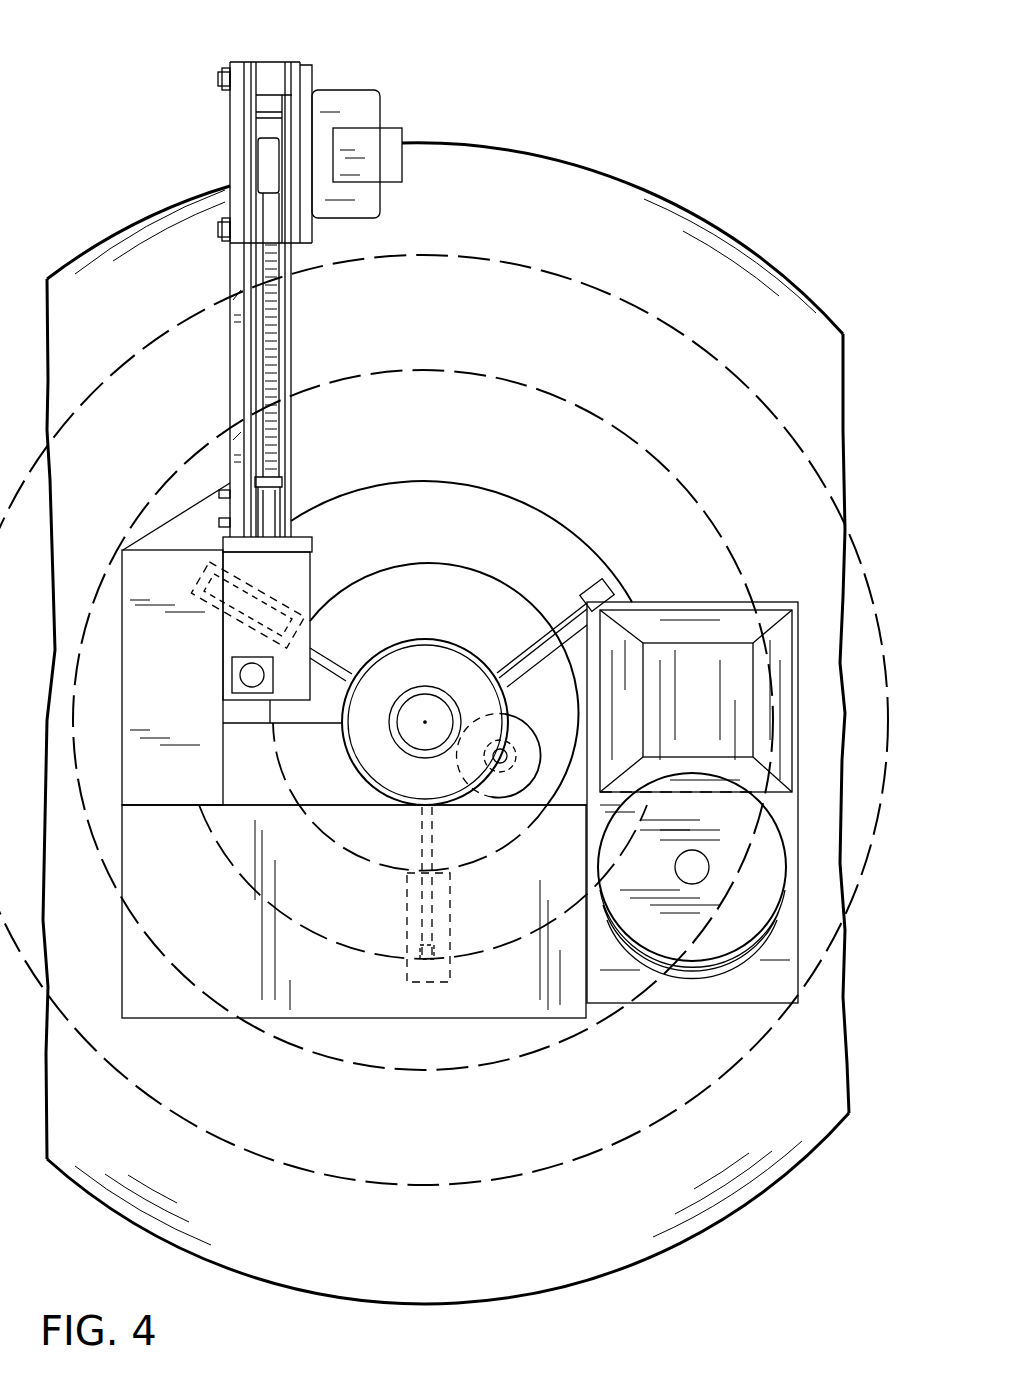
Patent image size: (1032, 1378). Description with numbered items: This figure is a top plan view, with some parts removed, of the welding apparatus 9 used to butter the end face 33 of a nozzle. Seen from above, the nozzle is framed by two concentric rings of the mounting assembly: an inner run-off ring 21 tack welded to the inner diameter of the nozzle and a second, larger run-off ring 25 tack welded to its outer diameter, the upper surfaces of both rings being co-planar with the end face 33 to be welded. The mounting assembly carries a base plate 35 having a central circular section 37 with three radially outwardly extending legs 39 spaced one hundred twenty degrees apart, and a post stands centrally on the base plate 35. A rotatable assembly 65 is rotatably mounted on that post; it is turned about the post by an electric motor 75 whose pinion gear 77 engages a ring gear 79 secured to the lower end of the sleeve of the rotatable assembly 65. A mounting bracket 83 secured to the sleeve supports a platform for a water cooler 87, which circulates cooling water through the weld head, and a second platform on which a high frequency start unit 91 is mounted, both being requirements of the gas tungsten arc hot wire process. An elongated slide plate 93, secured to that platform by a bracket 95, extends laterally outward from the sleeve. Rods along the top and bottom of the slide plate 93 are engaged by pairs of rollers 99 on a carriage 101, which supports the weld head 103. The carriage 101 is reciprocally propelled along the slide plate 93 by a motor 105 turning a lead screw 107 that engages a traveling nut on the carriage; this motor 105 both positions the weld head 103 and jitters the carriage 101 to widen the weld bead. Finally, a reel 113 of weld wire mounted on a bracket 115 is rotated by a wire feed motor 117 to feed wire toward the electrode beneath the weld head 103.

The welding apparatus 9 is at (252, 1114).
The inner run-off ring 21 is at (615, 462).
The second, larger run-off ring 25 is at (675, 235).
The end face 33 is at (530, 290).
The base plate 35 is at (466, 575).
The central circular section 37 is at (405, 590).
The legs 39 is at (278, 548).
The rotatable assembly 65 is at (638, 530).
The electric motor 75 is at (505, 800).
The pinion gear 77 is at (525, 732).
The ring gear 79 is at (418, 662).
The mounting bracket 83 is at (250, 795).
The water cooler 87 is at (495, 1005).
The high frequency start unit 91 is at (142, 713).
The slide plate 93 is at (232, 386).
The bracket 95 is at (170, 532).
The rollers 99 is at (240, 65).
The carriage 101 is at (245, 112).
The weld head 103 is at (353, 100).
The motor 105 is at (300, 605).
The lead screw 107 is at (270, 377).
The reel 113 is at (775, 885).
The bracket 115 is at (792, 816).
The wire feed motor 117 is at (722, 627).